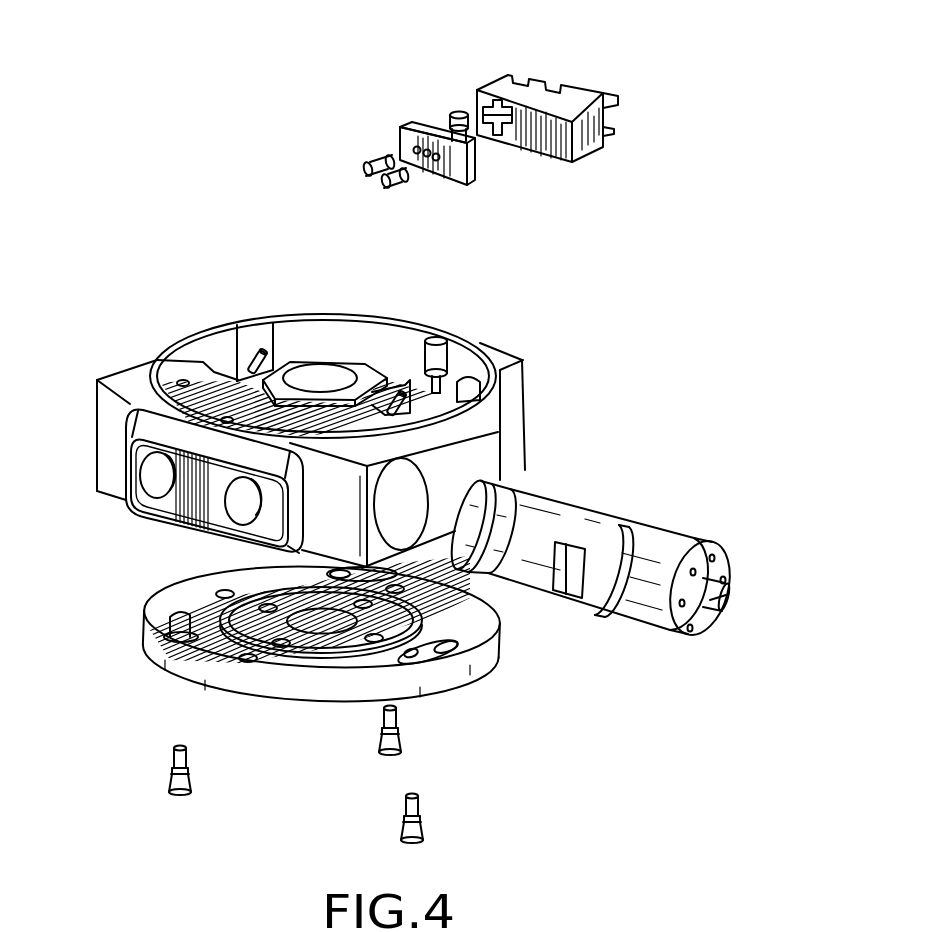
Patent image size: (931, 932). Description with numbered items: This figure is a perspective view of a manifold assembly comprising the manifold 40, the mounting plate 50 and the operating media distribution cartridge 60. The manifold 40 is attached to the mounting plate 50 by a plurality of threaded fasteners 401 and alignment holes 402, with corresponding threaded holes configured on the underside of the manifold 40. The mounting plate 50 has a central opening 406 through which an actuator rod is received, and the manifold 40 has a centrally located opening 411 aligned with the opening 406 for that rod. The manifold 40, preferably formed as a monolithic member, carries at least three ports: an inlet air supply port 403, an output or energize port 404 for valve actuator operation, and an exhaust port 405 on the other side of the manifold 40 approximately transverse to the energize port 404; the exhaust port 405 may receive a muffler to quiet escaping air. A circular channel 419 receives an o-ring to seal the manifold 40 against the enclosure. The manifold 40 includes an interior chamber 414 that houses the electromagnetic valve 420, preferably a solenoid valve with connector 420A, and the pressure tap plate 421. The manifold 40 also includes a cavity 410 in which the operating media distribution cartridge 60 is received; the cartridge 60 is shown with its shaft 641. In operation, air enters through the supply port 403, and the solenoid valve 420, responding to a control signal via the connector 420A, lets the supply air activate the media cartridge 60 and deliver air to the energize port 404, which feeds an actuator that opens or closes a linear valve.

The manifold 40 is at (107, 370).
The exhaust port 405 is at (527, 388).
The circular channel 419 is at (157, 366).
The centrally located opening 411 is at (318, 373).
The interior chamber 414 is at (377, 342).
The cavity 410 is at (415, 486).
The operating media distribution cartridge 60 is at (622, 512).
The motor shaft 641 is at (727, 592).
The inlet air supply port 403 is at (157, 478).
The energize port 404 is at (243, 503).
The alignment holes 402 is at (330, 574).
The mounting plate 50 is at (480, 670).
The threaded fasteners 401 is at (406, 737).
The central opening 406 is at (320, 626).
The electromagnetic valve 420 is at (571, 106).
The connector 420A is at (620, 102).
The pressure tap plate 421 is at (409, 122).